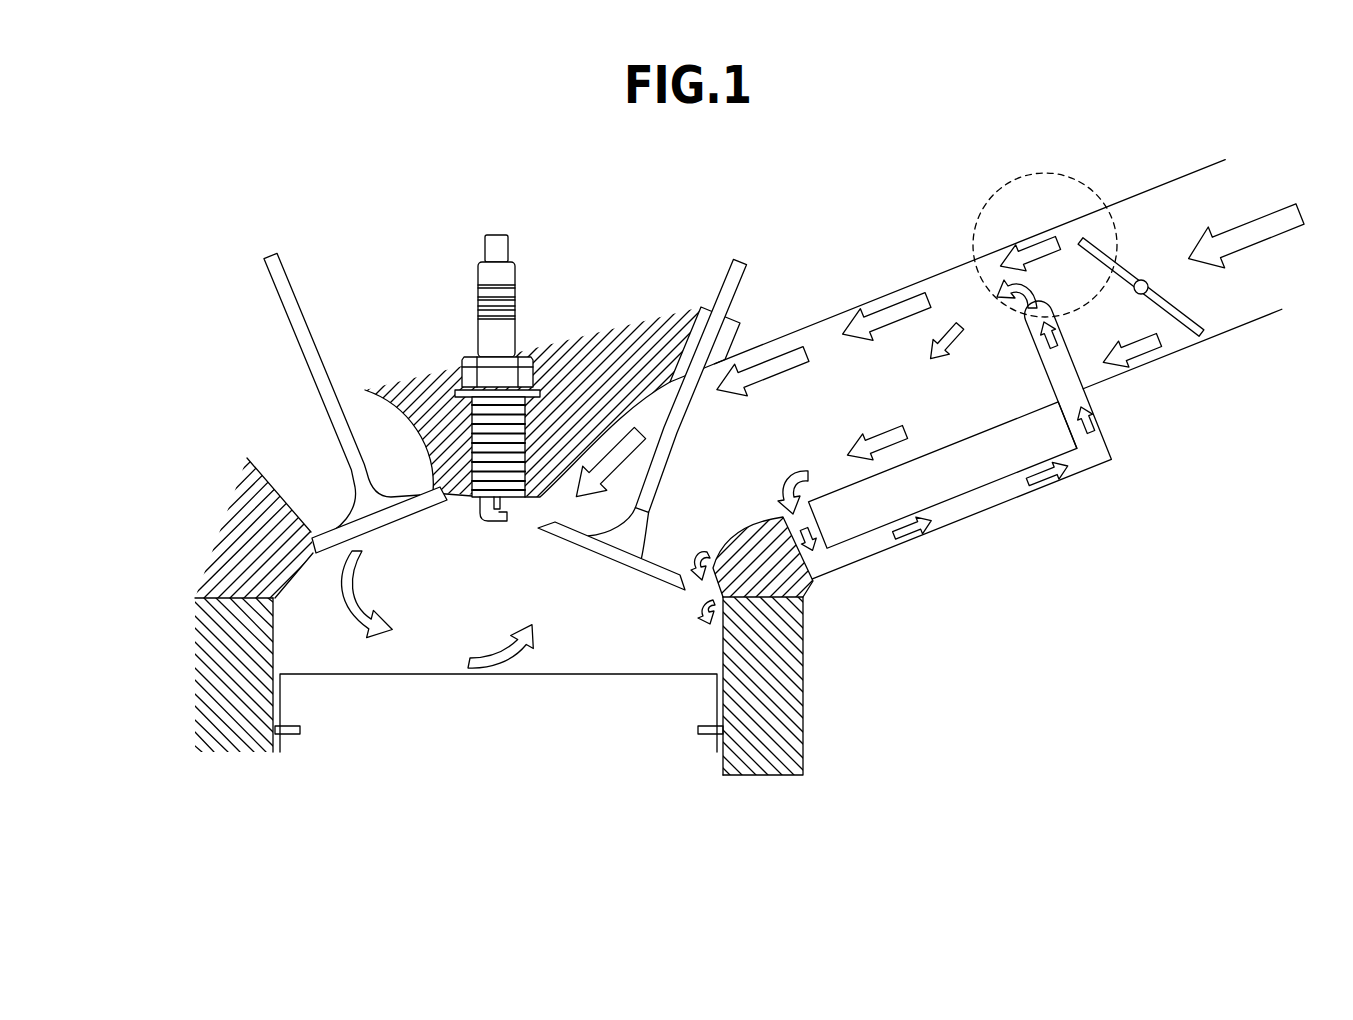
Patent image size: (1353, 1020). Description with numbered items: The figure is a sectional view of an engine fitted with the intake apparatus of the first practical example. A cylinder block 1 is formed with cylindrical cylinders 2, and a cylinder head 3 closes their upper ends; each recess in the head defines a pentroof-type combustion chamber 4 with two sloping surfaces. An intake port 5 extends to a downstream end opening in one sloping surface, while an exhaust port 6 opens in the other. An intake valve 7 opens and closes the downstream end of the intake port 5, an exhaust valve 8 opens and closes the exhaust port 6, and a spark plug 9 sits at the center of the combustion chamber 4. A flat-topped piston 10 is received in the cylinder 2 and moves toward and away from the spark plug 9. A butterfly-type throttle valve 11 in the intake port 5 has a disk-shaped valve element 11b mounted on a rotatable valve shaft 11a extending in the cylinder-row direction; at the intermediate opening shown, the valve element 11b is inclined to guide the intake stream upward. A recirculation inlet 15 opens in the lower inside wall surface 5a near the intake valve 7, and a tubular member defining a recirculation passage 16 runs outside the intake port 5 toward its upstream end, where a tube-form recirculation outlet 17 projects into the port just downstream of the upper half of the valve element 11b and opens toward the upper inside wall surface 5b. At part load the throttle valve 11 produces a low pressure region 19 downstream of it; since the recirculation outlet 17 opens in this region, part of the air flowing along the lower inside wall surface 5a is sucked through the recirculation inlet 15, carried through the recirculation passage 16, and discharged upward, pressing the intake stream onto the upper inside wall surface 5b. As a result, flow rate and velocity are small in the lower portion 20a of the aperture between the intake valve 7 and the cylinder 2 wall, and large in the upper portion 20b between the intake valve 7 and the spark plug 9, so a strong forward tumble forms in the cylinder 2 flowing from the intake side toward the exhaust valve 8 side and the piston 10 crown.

The cylinder block 1 is at (240, 682).
The cylinder 2 is at (245, 634).
The cylinder head 3 is at (248, 538).
The combustion chamber 4 is at (426, 595).
The intake port 5 is at (1010, 336).
The lower inside wall surface 5a is at (1182, 348).
The upper inside wall surface 5b is at (970, 262).
The exhaust port 6 is at (380, 430).
The intake valve 7 is at (618, 560).
The exhaust valve 8 is at (318, 375).
The spark plug 9 is at (491, 524).
The piston 10 is at (700, 700).
The throttle valve 11 is at (1170, 258).
The valve shaft 11a is at (1147, 280).
The valve element 11b is at (1185, 312).
The recirculation inlet 15 is at (798, 505).
The recirculation passage 16 is at (948, 512).
The recirculation outlet 17 is at (1050, 290).
The low pressure region 19 is at (1003, 318).
The lower portion of the open aperture 20a is at (708, 587).
The upper portion of the aperture 20b is at (548, 503).